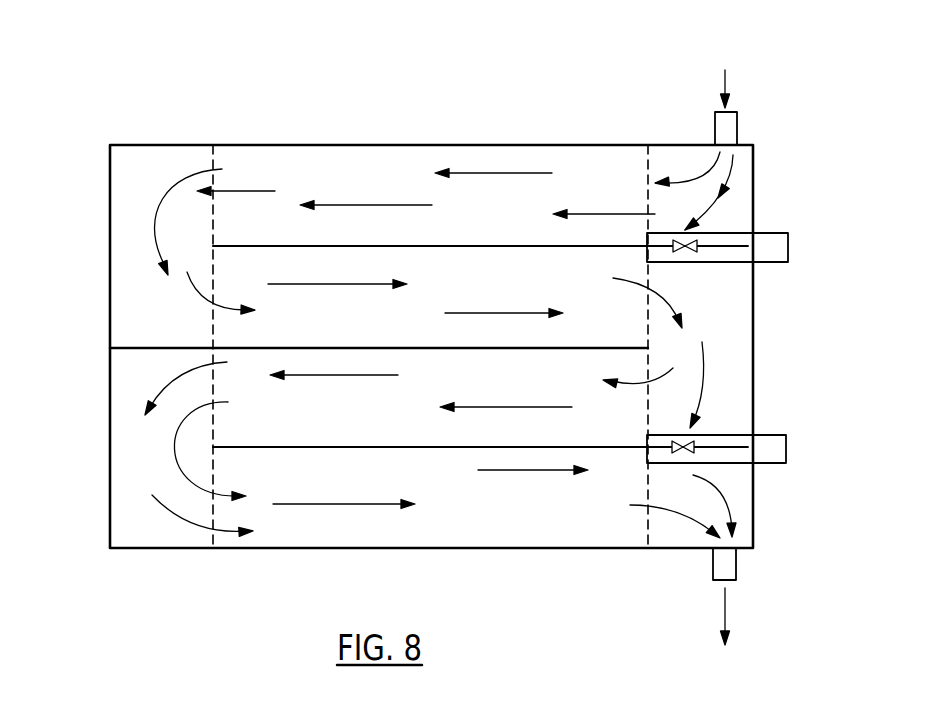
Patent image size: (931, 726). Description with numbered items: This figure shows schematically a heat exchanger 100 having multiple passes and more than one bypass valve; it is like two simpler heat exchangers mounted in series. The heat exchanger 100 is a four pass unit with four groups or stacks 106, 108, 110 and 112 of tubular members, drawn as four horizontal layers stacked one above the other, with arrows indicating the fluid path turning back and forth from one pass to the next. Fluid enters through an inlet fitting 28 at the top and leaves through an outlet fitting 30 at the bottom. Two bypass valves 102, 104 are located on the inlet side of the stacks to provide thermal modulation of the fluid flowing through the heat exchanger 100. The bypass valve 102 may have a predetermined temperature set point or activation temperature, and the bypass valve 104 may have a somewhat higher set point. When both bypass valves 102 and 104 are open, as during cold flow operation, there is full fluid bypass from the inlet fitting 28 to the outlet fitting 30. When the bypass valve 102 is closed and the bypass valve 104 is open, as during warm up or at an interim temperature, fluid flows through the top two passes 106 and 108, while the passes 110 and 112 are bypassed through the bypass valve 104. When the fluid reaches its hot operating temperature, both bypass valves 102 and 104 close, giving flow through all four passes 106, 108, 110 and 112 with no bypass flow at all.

The heat exchanger 100 is at (601, 91).
The inlet fitting 28 is at (715, 129).
The outlet fitting 30 is at (713, 563).
The bypass valve 102 is at (788, 252).
The bypass valve 104 is at (786, 451).
The first group or stack of tubular members 106 is at (103, 145).
The second group or stack of tubular members 108 is at (103, 246).
The third group or stack of tubular members 110 is at (103, 348).
The fourth group or stack of tubular members 112 is at (103, 447).